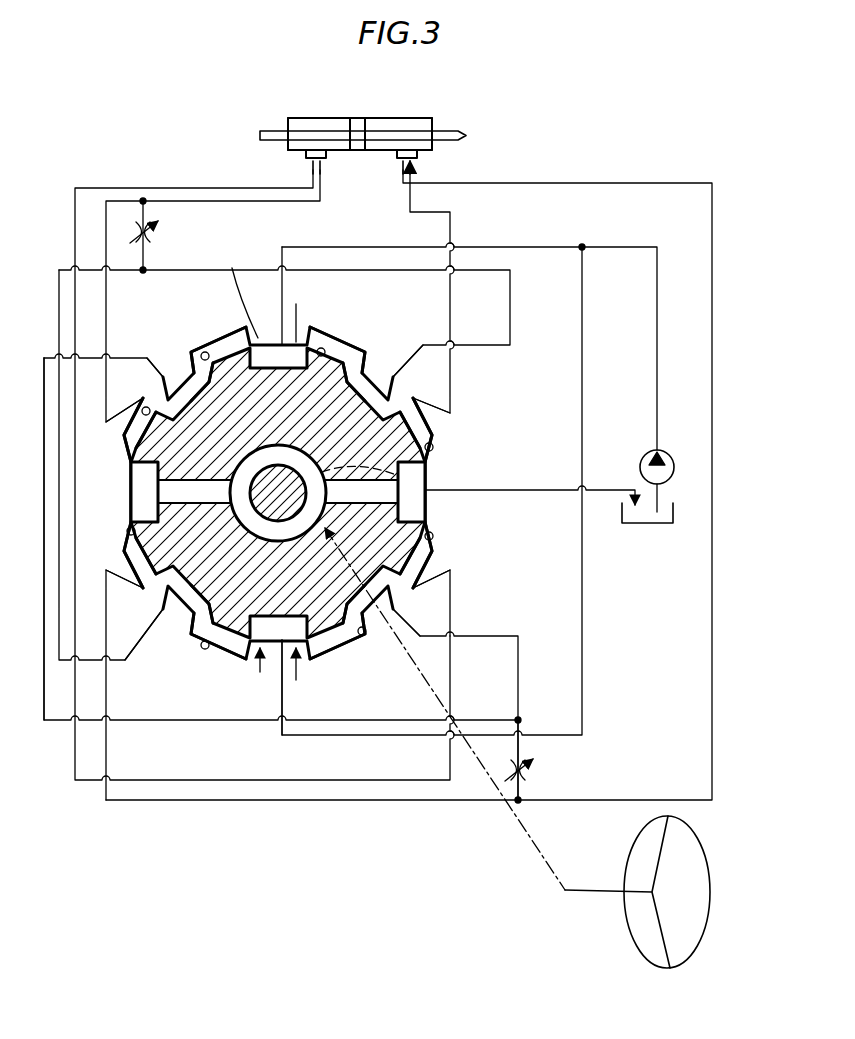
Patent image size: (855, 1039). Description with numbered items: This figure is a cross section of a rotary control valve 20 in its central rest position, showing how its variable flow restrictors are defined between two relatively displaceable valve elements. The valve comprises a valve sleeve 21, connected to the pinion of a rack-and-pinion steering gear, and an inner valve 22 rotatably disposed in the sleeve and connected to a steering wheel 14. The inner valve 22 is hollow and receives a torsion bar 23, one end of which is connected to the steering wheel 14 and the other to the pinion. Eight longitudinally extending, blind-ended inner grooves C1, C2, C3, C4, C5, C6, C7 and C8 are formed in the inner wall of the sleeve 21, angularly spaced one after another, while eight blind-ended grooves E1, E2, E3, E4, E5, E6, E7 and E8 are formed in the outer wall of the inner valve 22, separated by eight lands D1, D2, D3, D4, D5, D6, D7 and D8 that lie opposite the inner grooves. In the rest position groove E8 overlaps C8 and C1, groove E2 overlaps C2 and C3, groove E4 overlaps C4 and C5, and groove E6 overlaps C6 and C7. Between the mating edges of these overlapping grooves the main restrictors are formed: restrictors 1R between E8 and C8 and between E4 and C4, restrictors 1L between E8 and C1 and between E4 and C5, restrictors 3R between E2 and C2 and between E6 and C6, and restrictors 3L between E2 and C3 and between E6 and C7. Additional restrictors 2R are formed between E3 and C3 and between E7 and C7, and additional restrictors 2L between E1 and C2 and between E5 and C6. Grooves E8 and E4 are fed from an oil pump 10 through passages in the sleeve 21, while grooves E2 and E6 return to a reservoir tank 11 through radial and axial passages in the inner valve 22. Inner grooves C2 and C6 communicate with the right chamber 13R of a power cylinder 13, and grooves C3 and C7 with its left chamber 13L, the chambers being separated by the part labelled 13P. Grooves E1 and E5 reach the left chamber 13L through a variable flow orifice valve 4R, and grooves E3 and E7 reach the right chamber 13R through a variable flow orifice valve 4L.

The variable flow restrictor 1L is at (275, 470).
The variable flow restrictor 1R is at (261, 492).
The additional variable flow restrictor 2L is at (399, 392).
The additional variable flow restrictor 2R is at (160, 393).
The variable flow restrictor 3L is at (131, 472).
The variable flow restrictor 3R is at (432, 469).
The variable flow orifice valve 4L is at (535, 760).
The variable flow orifice valve 4R is at (161, 235).
The oil pump 10 is at (671, 461).
The reservoir tank 11 is at (656, 527).
The power cylinder 13 is at (382, 120).
The left chamber 13L is at (330, 124).
The right chamber 13R is at (408, 124).
The piston 13P is at (358, 150).
The steering wheel 14 is at (626, 920).
The rotary control valve 20 is at (54, 352).
The valve sleeve 21 is at (372, 350).
The inner valve 22 is at (195, 630).
The torsion bar 23 is at (283, 464).
The inner groove C1 is at (323, 346).
The inner groove C2 is at (434, 448).
The inner groove C3 is at (434, 536).
The inner groove C4 is at (365, 636).
The inner groove C5 is at (205, 650).
The inner groove C6 is at (128, 532).
The inner groove C7 is at (144, 414).
The inner groove C8 is at (205, 352).
The land D1 is at (333, 368).
The land D2 is at (428, 433).
The land D3 is at (415, 545).
The land D4 is at (345, 628).
The land D5 is at (229, 642).
The land D6 is at (150, 543).
The land D7 is at (148, 452).
The land D8 is at (233, 366).
The groove E1 is at (369, 380).
The groove E2 is at (424, 488).
The groove E3 is at (400, 617).
The groove E4 is at (280, 632).
The groove E5 is at (182, 612).
The groove E6 is at (162, 486).
The groove E7 is at (185, 378).
The groove E8 is at (270, 366).